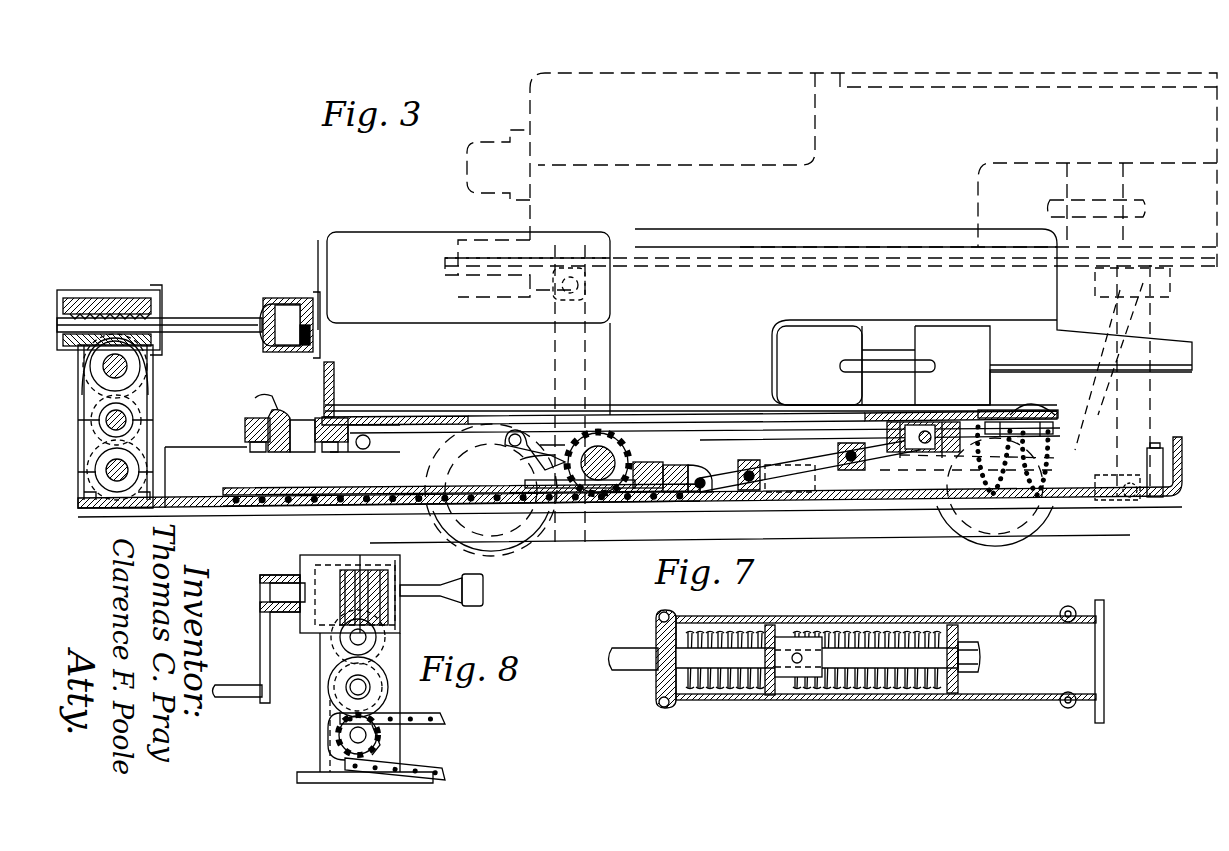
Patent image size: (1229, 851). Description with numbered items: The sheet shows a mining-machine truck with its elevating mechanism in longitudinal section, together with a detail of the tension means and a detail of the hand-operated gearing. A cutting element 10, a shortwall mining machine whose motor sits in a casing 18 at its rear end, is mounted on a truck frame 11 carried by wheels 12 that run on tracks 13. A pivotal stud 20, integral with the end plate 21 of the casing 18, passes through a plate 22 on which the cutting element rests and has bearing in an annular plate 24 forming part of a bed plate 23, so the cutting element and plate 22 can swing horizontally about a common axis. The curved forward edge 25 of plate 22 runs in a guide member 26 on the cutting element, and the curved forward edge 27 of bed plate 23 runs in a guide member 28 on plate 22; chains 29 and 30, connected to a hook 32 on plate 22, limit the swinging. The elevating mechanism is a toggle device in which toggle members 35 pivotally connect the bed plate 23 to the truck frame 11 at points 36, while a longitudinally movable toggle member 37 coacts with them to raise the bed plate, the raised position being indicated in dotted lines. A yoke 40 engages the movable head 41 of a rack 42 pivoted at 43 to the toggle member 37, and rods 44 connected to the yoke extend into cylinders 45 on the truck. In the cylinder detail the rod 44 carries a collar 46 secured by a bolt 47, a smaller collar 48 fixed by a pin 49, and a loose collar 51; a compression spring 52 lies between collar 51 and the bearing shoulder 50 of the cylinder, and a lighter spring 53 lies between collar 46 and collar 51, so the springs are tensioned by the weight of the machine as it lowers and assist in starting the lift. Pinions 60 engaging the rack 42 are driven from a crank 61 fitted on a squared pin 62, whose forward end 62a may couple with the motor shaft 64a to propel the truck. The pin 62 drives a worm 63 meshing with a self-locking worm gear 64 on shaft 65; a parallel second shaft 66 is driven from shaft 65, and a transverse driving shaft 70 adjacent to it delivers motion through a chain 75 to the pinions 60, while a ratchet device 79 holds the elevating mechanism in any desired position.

In FIG. 3, the cutting element 10 is at (701, 224).
In FIG. 3, the truck frame 11 is at (1182, 476).
In FIG. 3, the wheels 12 is at (492, 528).
In FIG. 8, the tracks 13 is at (385, 740).
In FIG. 3, the motor casing 18 is at (464, 388).
In FIG. 3, the pivotal stud 20 is at (258, 400).
In FIG. 3, the end plate 21 is at (325, 383).
In FIG. 3, the plate 22 is at (658, 428).
In FIG. 3, the bed plate 23 is at (632, 409).
In FIG. 3, the annular plate 24 is at (244, 432).
In FIG. 3, the forward edge of plate 25 is at (1045, 415).
In FIG. 3, the guide member 26 is at (1045, 420).
In FIG. 3, the forward edge of bed plate 27 is at (1000, 425).
In FIG. 3, the guide member 28 is at (960, 455).
In FIG. 3, the chain 29 is at (1042, 470).
In FIG. 3, the chain 30 is at (994, 461).
In FIG. 3, the hook 32 is at (1048, 438).
In FIG. 3, the toggle members 35 is at (400, 478).
In FIG. 3, the pivot points 36 is at (365, 435).
In FIG. 3, the longitudinally movable toggle member 37 is at (785, 440).
In FIG. 3, the yoke 40 is at (642, 462).
In FIG. 3, the movable head 41 is at (678, 465).
In FIG. 3, the rack 42 is at (315, 490).
In FIG. 3, the pivotal connection 43 is at (705, 465).
In FIG. 7, the rods 44 is at (615, 650).
In FIG. 7, the cylinders 45 is at (825, 618).
In FIG. 7, the collar 46 is at (955, 628).
In FIG. 7, the bolt 47 is at (975, 642).
In FIG. 7, the smaller collar 48 is at (790, 640).
In FIG. 7, the pin 49 is at (797, 664).
In FIG. 7, the bearing shoulder 50 is at (656, 700).
In FIG. 7, the collar 51 is at (768, 690).
In FIG. 7, the compression spring 52 is at (715, 690).
In FIG. 7, the compression spring 53 is at (890, 630).
In FIG. 3, the pinions 60 is at (604, 497).
In FIG. 8, the crank 61 is at (262, 620).
In FIG. 3, the squared pin 62 is at (90, 318).
In FIG. 8, the squared pin 62 is at (280, 588).
In FIG. 3, the forward end of pin 62a is at (272, 314).
In FIG. 8, the forward end of pin 62a is at (480, 592).
In FIG. 3, the worm 63 is at (128, 302).
In FIG. 8, the worm 63 is at (388, 585).
In FIG. 3, the worm gear 64 is at (140, 366).
In FIG. 8, the worm gear 64 is at (395, 625).
In FIG. 3, the motor shaft 64a is at (290, 298).
In FIG. 8, the shaft 65 is at (352, 638).
In FIG. 8, the second shaft 66 is at (348, 688).
In FIG. 8, the transverse driving shaft 70 is at (338, 736).
In FIG. 8, the chain 75 is at (430, 713).
In FIG. 3, the ratchet device 79 is at (540, 430).